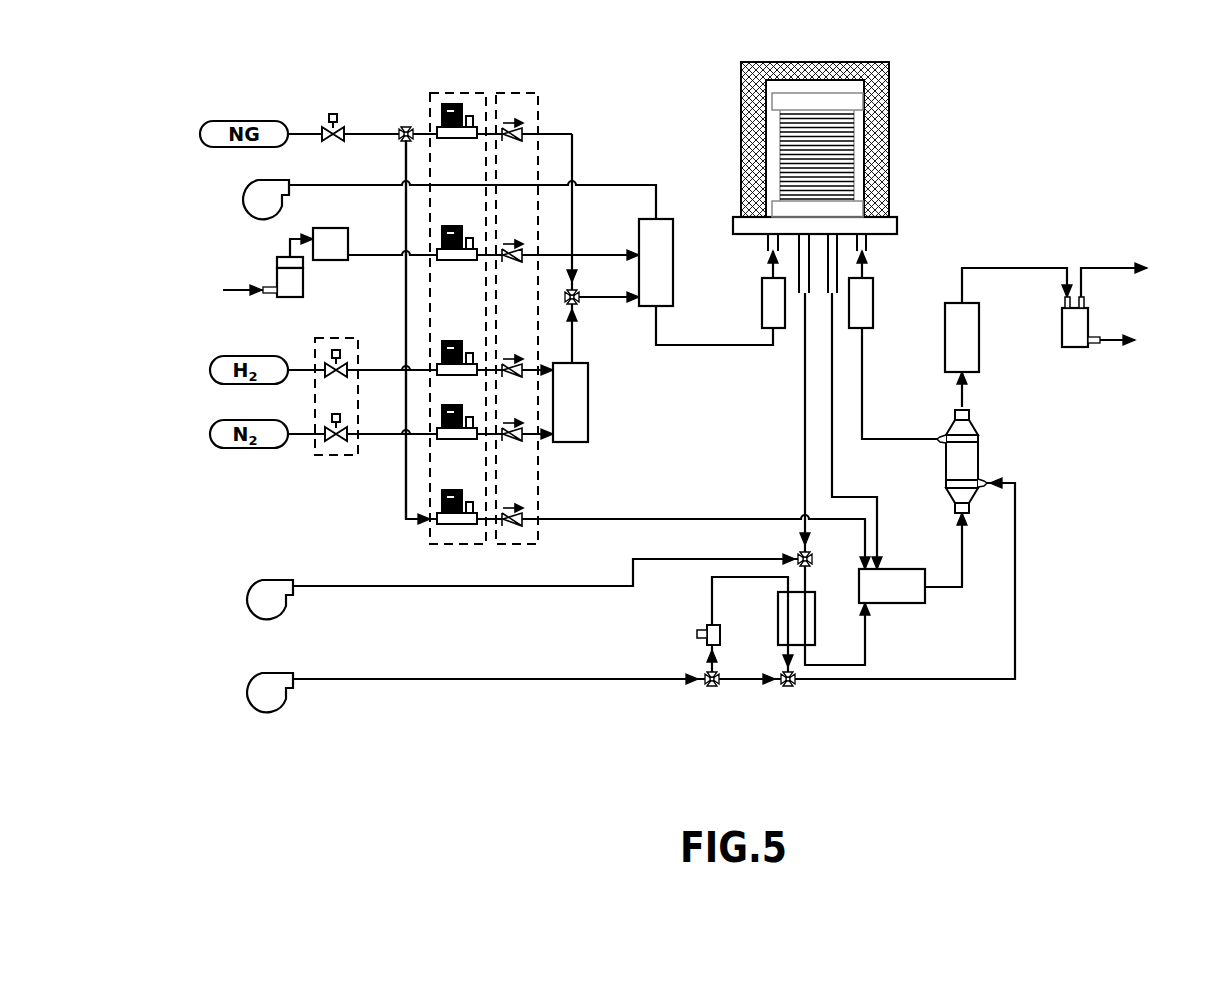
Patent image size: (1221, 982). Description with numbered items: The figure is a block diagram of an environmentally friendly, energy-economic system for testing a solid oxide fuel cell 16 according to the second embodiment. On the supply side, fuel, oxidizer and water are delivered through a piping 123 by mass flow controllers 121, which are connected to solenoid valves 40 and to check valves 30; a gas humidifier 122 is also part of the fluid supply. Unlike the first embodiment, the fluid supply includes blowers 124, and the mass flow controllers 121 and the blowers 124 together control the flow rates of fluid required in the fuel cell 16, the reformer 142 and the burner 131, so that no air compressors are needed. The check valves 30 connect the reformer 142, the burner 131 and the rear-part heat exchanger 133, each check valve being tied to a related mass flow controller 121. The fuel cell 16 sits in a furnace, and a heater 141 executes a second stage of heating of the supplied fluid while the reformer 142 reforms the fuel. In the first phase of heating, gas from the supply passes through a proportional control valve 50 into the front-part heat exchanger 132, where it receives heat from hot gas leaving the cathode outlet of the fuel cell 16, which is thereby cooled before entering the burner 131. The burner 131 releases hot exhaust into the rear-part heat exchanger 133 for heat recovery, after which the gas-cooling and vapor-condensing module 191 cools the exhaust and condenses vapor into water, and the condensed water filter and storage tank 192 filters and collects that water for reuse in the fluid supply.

The solid oxide fuel cell 16 is at (889, 76).
The check valves 30 is at (538, 121).
The solenoid valves 40 is at (336, 116).
The proportional control valve 50 is at (697, 635).
The mass flow controllers 121 is at (445, 93).
The gas humidifier 122 is at (590, 400).
The piping 123 is at (378, 131).
The blowers 124 is at (245, 205).
The burner 131 is at (925, 590).
The front-part heat exchanger 132 is at (815, 632).
The rear-part heat exchanger 133 is at (979, 453).
The heater 141 is at (762, 300).
The reformer 142 is at (668, 219).
The gas-cooling and vapor-condensing module 191 is at (979, 348).
The condensed water filter and storage tank 192 is at (1091, 316).